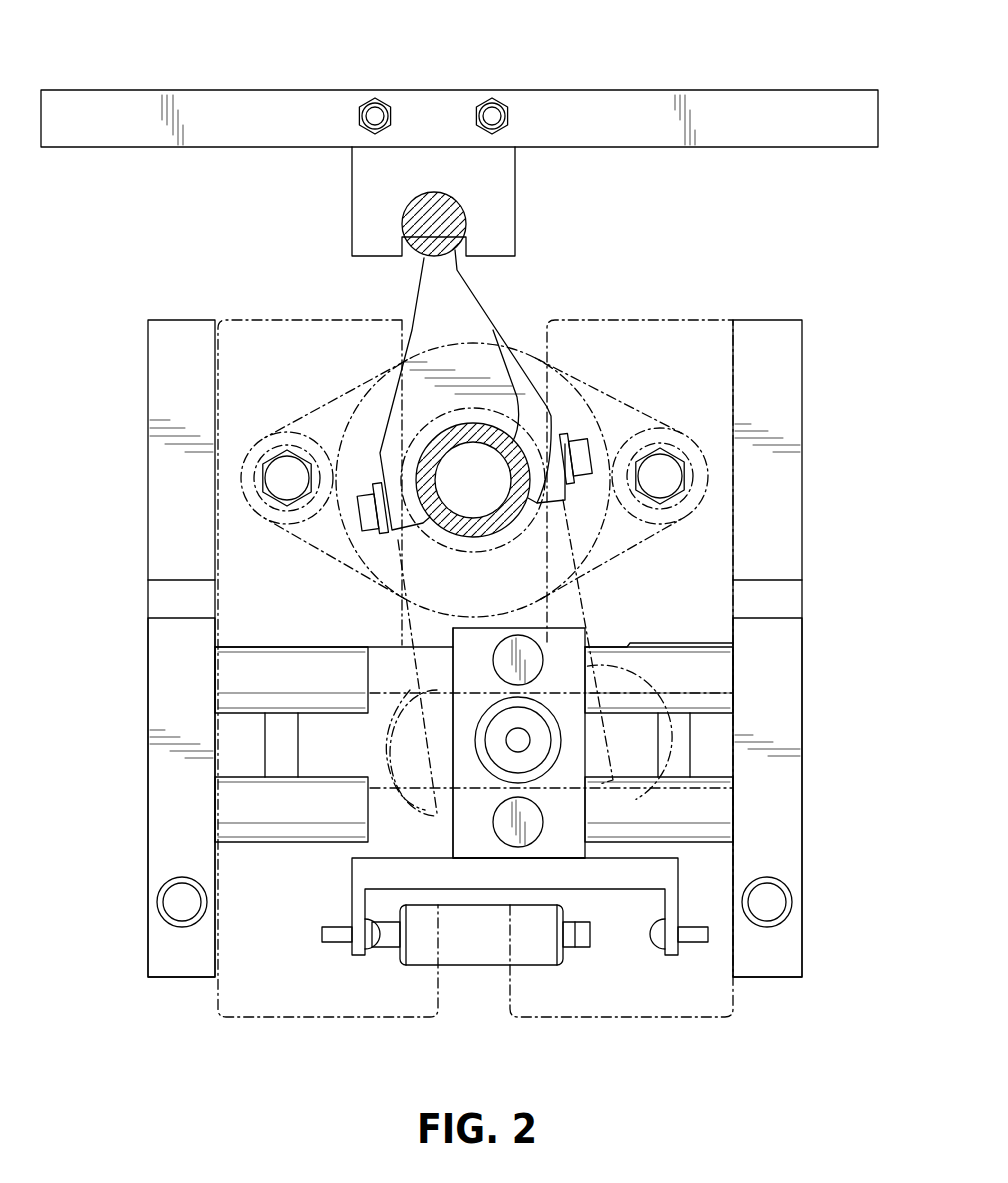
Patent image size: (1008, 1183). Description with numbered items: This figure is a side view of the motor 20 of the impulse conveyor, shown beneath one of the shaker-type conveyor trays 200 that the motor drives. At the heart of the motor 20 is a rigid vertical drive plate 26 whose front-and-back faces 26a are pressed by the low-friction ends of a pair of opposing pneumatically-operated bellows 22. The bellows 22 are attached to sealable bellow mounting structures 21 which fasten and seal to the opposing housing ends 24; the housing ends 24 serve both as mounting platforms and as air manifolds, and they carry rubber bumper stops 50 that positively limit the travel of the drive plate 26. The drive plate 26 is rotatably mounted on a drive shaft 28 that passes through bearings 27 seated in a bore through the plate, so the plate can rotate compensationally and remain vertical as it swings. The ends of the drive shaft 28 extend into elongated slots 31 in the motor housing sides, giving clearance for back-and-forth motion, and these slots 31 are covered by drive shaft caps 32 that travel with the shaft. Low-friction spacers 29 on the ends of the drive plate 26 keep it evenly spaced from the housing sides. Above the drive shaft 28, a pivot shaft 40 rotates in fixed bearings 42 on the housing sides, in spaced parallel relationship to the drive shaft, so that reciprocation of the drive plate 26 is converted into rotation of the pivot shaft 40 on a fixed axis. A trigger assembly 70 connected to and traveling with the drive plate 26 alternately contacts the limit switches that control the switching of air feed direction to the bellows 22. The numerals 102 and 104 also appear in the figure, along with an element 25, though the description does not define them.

The motor 20 is at (784, 257).
The bellow mounting structures 21 is at (253, 755).
The bellows 22 is at (380, 653).
The housing ends 24 is at (172, 697).
The upright post 25 is at (178, 395).
The drive plate 26 is at (594, 750).
The front-and-back faces 26a is at (450, 663).
The bearings 27 is at (550, 715).
The drive shaft 28 is at (537, 743).
The low-friction spacers 29 is at (505, 668).
The slots 31 is at (368, 780).
The drive shaft caps 32 is at (370, 843).
The pivot shaft 40 is at (503, 443).
The fixed bearings 42 is at (620, 400).
The bumper stops 50 is at (235, 675).
The trigger assembly 70 is at (622, 880).
The roller 102 is at (436, 212).
The lever arm 104 is at (472, 322).
The shaker-type conveyor trays 200 is at (596, 115).